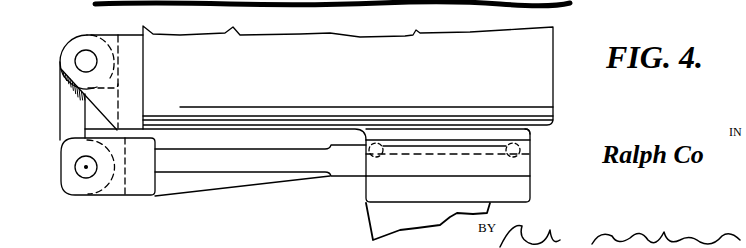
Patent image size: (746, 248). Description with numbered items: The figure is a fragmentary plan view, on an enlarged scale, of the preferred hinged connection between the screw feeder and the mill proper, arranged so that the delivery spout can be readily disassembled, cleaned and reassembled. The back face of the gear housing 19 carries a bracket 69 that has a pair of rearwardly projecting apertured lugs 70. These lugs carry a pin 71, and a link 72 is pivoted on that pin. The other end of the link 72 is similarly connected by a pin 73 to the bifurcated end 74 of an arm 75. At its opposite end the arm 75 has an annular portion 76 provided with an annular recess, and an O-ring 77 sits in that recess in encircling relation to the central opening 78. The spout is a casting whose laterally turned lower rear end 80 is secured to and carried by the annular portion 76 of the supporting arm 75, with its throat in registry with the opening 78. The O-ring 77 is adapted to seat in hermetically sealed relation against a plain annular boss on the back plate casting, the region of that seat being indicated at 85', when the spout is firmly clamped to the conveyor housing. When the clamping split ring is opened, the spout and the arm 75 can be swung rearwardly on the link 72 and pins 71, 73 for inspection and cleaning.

The gear housing 19 is at (195, 83).
The bracket 69 is at (137, 62).
The apertured lugs 70 is at (80, 38).
The pin 71 is at (87, 60).
The link 72 is at (72, 127).
The pin 73 is at (87, 168).
The bifurcated end 74 is at (117, 187).
The arm 75 is at (229, 165).
The annular portion 76 is at (519, 166).
The O-ring 77 is at (533, 152).
The central opening 78 is at (451, 156).
The laterally turned lower rear end 80 is at (375, 185).
The fillet corner 85' is at (556, 103).